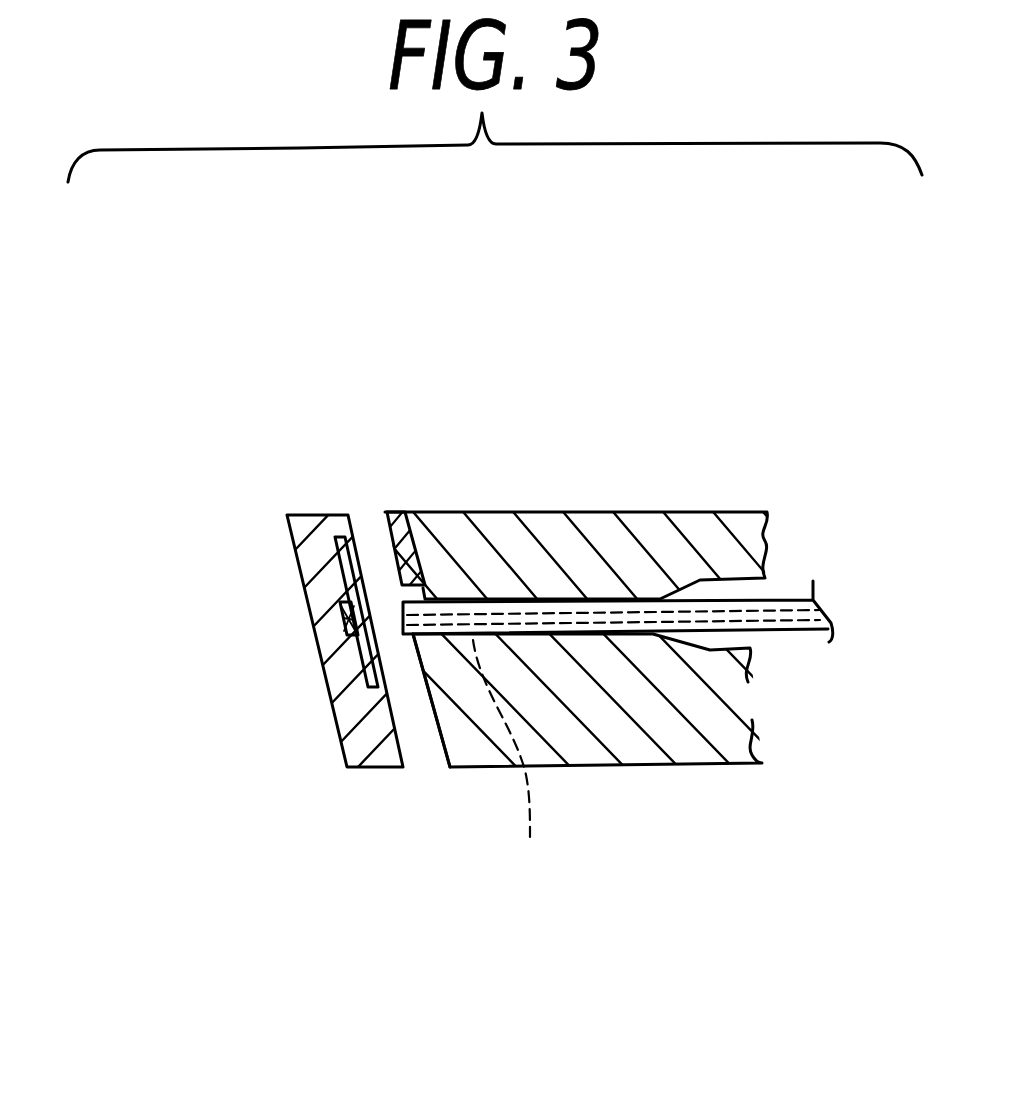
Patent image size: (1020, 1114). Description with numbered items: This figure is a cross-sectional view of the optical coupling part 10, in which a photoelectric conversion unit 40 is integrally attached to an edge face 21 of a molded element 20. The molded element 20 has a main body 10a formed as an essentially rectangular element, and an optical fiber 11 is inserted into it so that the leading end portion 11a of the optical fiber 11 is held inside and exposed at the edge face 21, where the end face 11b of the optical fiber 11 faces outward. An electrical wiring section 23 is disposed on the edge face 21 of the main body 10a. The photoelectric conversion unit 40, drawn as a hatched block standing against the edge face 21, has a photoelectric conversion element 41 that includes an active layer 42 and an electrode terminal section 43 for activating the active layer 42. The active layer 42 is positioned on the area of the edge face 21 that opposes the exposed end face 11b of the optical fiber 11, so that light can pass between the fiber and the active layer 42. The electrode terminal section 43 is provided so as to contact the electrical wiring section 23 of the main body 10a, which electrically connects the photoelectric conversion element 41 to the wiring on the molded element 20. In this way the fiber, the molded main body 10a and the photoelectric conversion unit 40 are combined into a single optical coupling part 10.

The optical coupling part 10 is at (623, 584).
The main body 10a is at (622, 753).
The optical fiber 11 is at (631, 732).
The leading end portion 11a is at (518, 762).
The end face 11b is at (306, 530).
The molded element 20 is at (653, 508).
The edge face 21 is at (443, 750).
The electrical wiring section 23 is at (393, 546).
The photoelectric conversion unit 40 is at (356, 607).
The photoelectric conversion element 41 is at (320, 582).
The active layer 42 is at (340, 632).
The electrode terminal section 43 is at (313, 550).